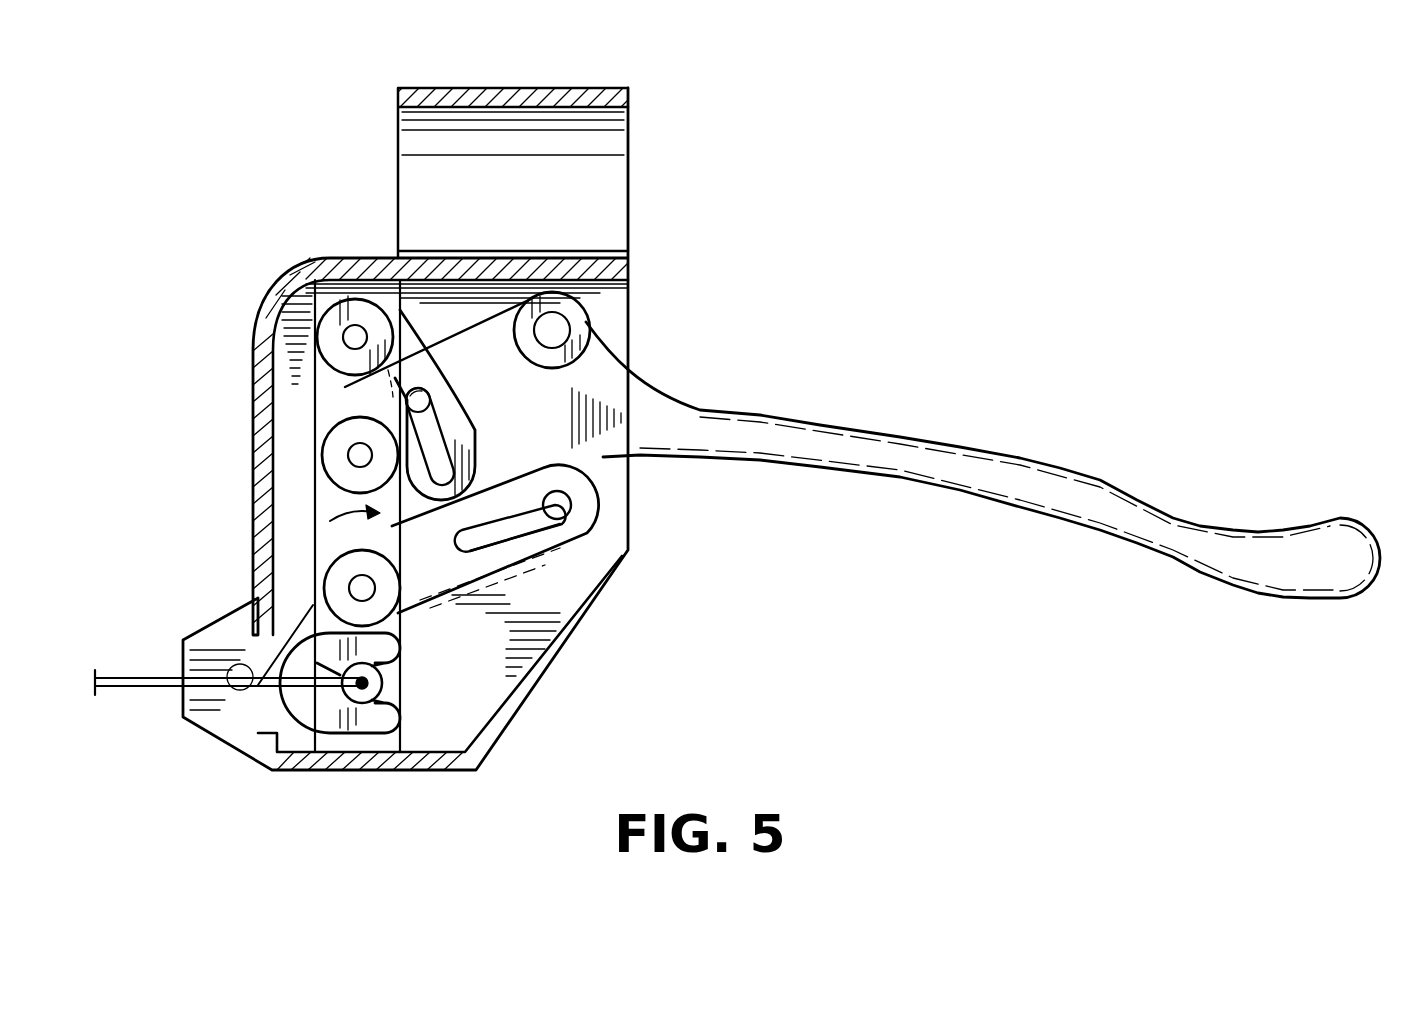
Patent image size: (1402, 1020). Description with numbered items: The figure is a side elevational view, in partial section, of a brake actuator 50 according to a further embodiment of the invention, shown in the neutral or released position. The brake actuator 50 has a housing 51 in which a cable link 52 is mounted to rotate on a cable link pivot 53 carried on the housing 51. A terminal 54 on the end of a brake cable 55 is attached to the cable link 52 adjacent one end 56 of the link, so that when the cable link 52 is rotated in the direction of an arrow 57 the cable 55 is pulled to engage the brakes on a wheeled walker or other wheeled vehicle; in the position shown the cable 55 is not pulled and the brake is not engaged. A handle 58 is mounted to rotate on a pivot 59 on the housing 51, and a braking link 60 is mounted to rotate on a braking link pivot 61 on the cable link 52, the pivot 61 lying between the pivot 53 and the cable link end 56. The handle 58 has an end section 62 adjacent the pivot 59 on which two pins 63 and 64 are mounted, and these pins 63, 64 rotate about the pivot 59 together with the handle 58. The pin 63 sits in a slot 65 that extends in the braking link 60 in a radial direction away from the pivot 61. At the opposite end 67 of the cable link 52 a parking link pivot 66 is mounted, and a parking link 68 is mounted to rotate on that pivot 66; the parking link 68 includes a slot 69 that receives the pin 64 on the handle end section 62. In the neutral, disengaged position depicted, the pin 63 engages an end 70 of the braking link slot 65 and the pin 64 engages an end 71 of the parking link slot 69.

The brake actuator 50 is at (808, 222).
The housing 51 is at (555, 664).
The cable link 52 is at (315, 486).
The cable link pivot 53 is at (349, 455).
The terminal 54 is at (384, 683).
The brake cable 55 is at (115, 689).
The cable link end 56 is at (368, 735).
The arrow 57 is at (330, 521).
The handle 58 is at (1178, 517).
The pivot 59 is at (591, 329).
The braking link 60 is at (440, 603).
The braking link pivot 61 is at (350, 589).
The end section 62 is at (486, 306).
The pin 63 is at (537, 519).
The pin 64 is at (452, 392).
The slot 65 is at (504, 516).
The parking link pivot 66 is at (345, 331).
The end 67 is at (355, 326).
The parking link 68 is at (345, 387).
The slot 69 is at (448, 433).
The end 70 is at (572, 505).
The end 71 is at (448, 384).